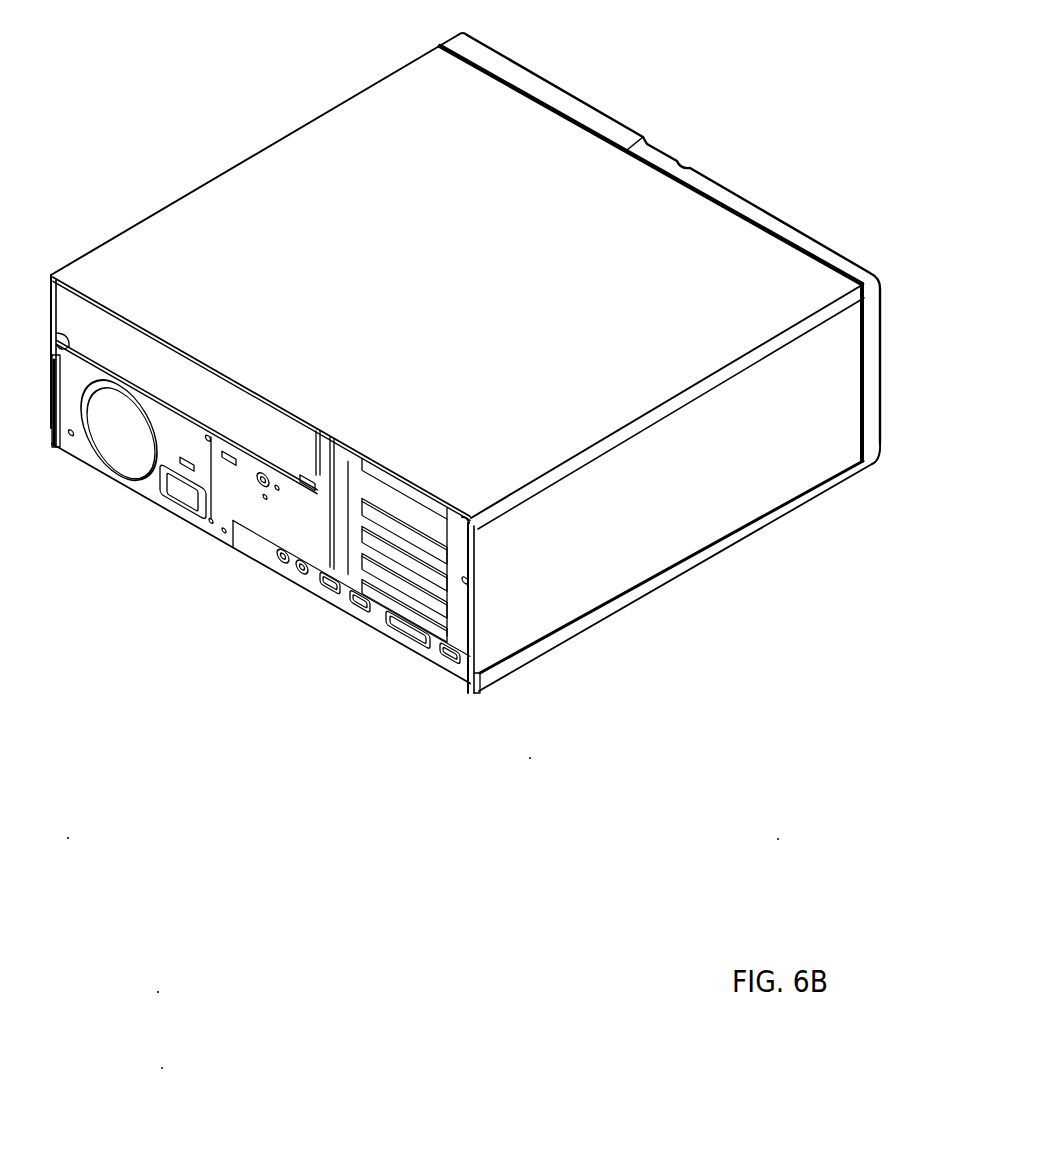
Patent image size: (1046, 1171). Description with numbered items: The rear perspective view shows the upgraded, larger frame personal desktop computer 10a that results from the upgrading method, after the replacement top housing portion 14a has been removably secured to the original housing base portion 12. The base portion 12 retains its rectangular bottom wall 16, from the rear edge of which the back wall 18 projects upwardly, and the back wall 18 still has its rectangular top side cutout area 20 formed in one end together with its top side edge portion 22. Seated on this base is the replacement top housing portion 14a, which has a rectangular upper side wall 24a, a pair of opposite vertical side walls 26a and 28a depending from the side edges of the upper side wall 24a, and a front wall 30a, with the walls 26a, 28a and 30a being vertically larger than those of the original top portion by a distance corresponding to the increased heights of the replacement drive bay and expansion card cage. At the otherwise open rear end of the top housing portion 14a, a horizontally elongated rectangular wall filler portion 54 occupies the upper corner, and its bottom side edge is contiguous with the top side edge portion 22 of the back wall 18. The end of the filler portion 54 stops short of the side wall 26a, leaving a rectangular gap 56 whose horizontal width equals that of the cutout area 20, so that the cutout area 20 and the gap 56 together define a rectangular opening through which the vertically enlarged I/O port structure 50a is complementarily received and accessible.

The larger frame personal desktop computer 10a is at (672, 129).
The base portion 12 is at (692, 559).
The replacement top housing portion 14a is at (695, 243).
The bottom wall 16 is at (600, 619).
The back wall 18 is at (265, 522).
The top side cutout area 20 is at (317, 560).
The top side edge portion 22 is at (90, 353).
The upper side wall 24a is at (488, 298).
The side wall 26a is at (802, 440).
The side wall 28a is at (52, 375).
The front wall 30a is at (825, 242).
The I/O port structure 50a is at (393, 510).
The wall filler portion 54 is at (157, 367).
The gap 56 is at (340, 480).